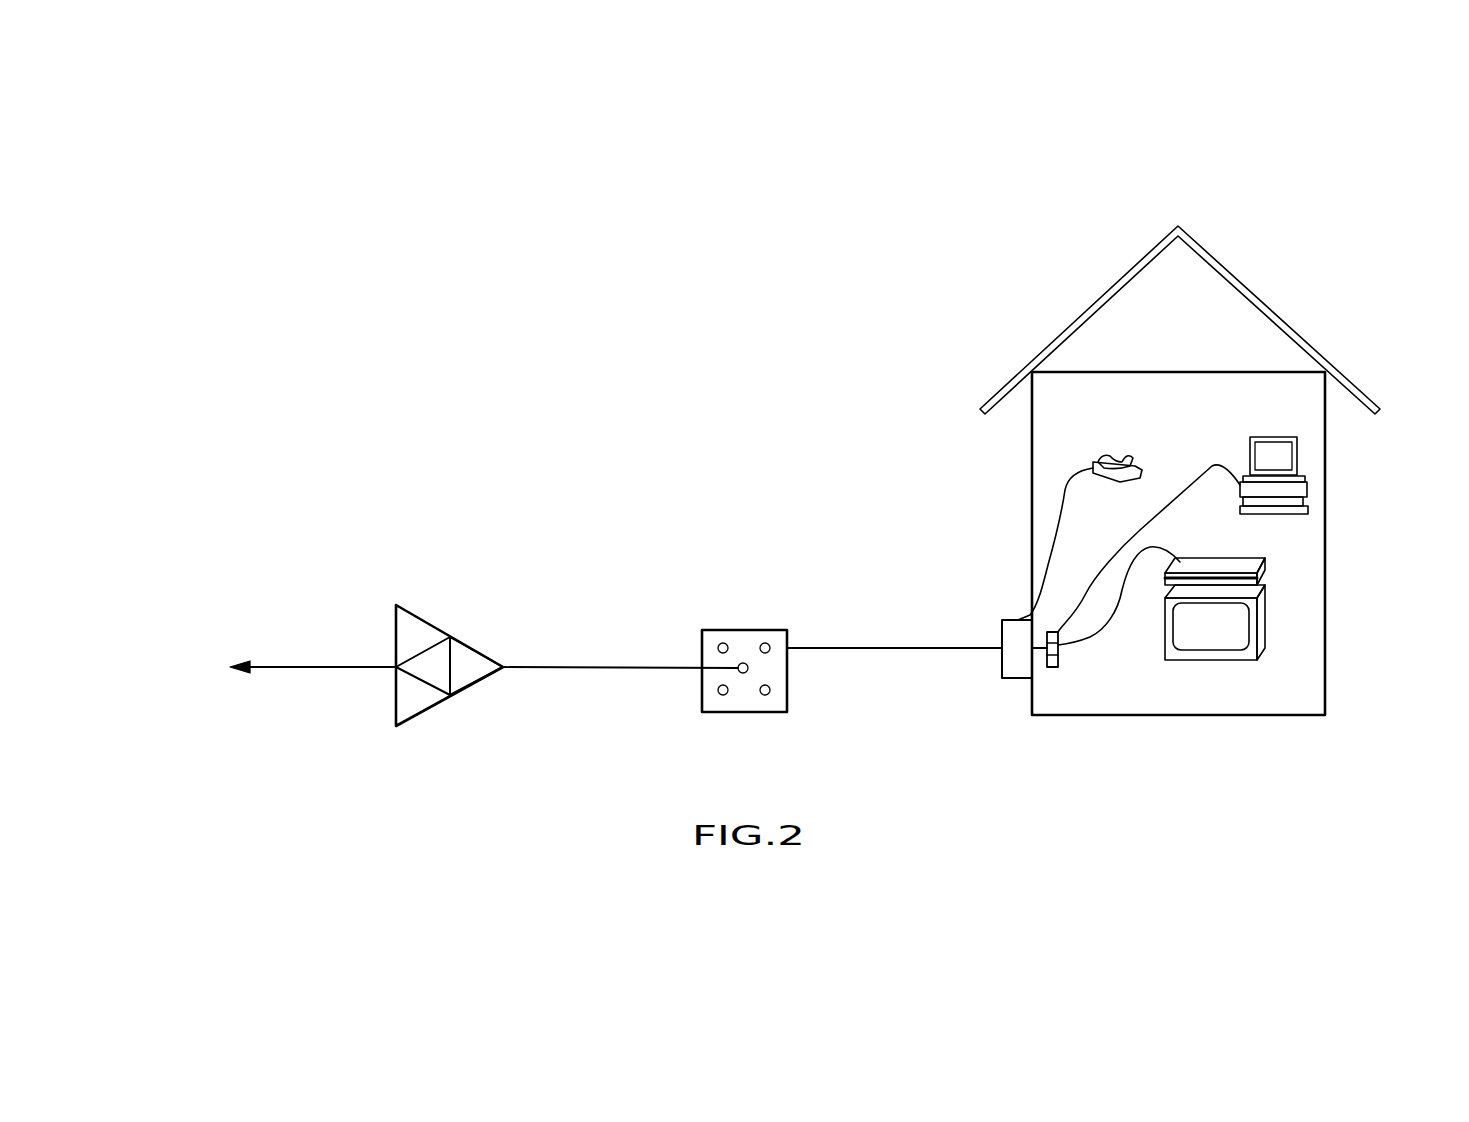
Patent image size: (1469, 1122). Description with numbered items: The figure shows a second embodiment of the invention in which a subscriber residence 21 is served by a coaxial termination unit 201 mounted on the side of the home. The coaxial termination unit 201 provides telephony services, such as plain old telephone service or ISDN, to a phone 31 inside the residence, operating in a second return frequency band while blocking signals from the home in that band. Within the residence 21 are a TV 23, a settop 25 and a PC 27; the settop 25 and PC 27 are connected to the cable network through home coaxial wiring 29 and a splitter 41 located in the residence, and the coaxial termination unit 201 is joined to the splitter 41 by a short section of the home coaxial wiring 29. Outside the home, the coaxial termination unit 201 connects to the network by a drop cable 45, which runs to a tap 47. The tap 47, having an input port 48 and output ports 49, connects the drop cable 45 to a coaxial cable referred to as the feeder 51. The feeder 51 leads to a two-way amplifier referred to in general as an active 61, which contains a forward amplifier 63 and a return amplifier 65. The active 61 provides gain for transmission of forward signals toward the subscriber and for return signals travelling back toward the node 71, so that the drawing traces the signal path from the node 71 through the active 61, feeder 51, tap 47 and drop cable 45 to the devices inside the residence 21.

The node 71 is at (285, 662).
The active 61 is at (497, 671).
The forward amplifier 63 is at (475, 740).
The return amplifier 65 is at (569, 642).
The feeder 51 is at (578, 667).
The tap 47 is at (737, 699).
The input port 48 is at (738, 670).
The output ports 49 is at (770, 652).
The drop cable 45 is at (905, 648).
The coaxial termination unit 201 is at (1002, 675).
The home coaxial wiring 29 is at (1038, 645).
The splitter 41 is at (1052, 667).
The subscriber residence 21 is at (1193, 717).
The phone 31 is at (1103, 452).
The PC 27 is at (1250, 455).
The settop 25 is at (1265, 558).
The TV 23 is at (1257, 660).